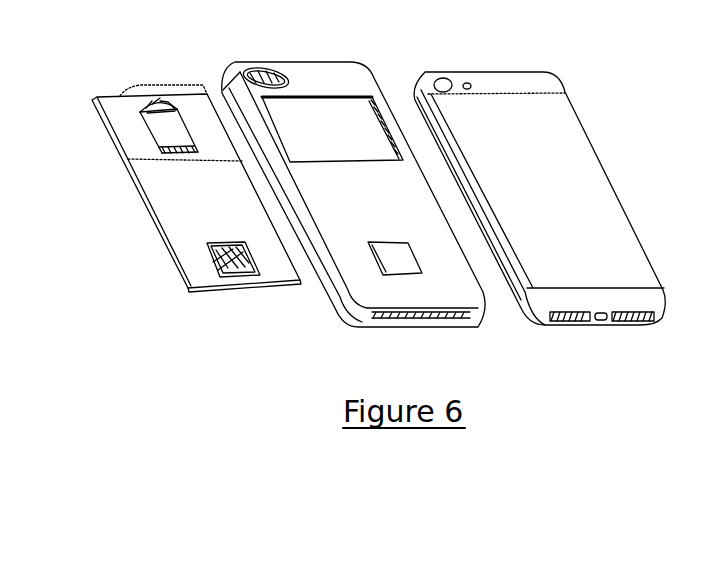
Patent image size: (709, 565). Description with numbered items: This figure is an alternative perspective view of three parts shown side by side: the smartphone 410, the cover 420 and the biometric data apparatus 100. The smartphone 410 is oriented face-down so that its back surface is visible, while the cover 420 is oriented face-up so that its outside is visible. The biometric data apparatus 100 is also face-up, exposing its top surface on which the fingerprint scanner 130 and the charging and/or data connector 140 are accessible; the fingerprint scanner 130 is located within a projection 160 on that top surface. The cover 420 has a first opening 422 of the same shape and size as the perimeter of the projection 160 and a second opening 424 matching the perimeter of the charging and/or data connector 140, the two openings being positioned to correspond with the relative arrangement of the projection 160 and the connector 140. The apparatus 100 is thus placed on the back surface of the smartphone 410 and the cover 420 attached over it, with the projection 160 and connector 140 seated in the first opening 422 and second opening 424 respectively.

The biometric data apparatus 100 is at (192, 298).
The fingerprint scanner 130 is at (159, 123).
The charging and/or data connector 140 is at (243, 267).
The projection 160 is at (131, 148).
The smartphone 410 is at (528, 66).
The cover 420 is at (350, 53).
The first opening 422 is at (311, 123).
The second opening 424 is at (399, 270).